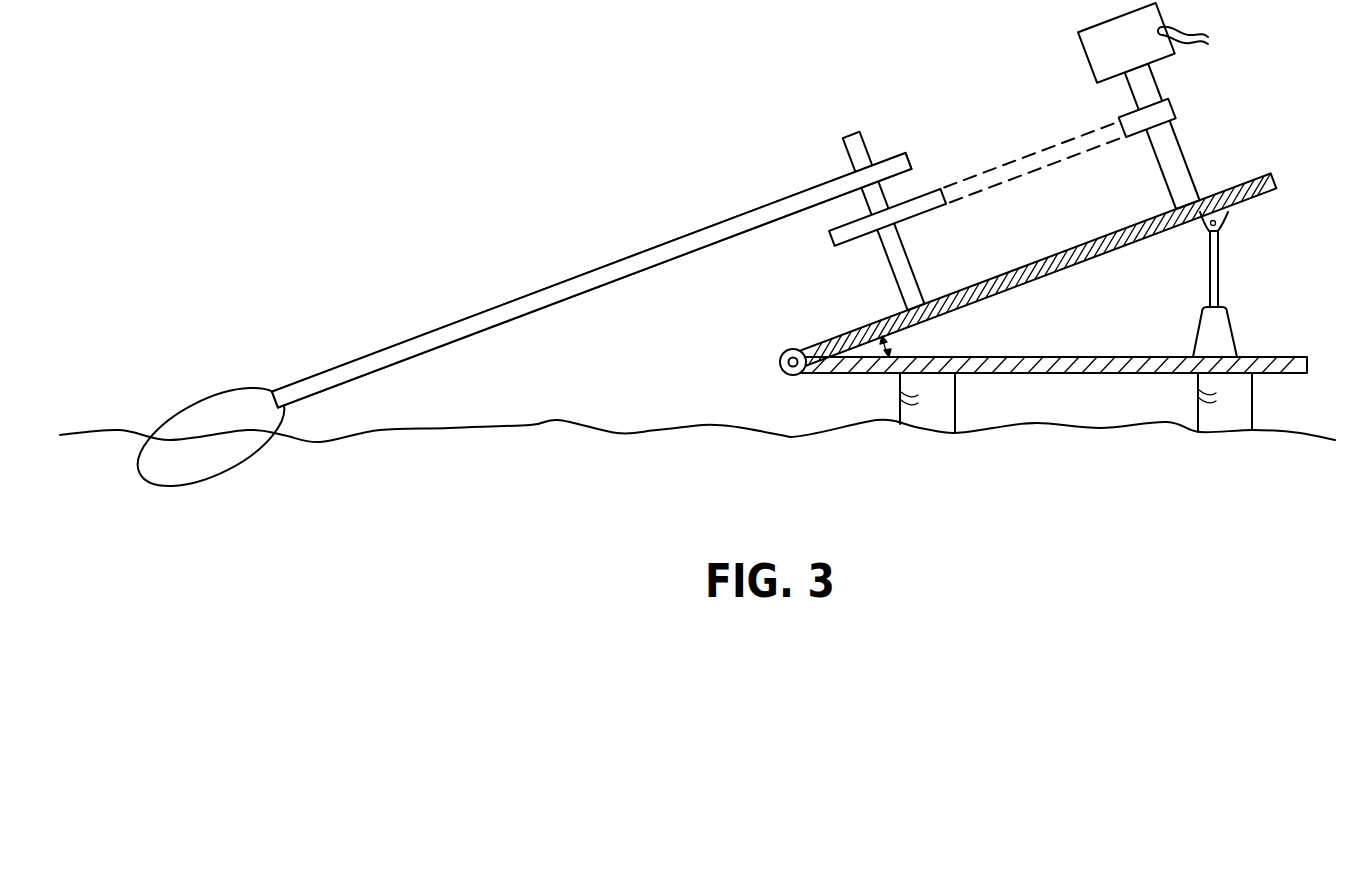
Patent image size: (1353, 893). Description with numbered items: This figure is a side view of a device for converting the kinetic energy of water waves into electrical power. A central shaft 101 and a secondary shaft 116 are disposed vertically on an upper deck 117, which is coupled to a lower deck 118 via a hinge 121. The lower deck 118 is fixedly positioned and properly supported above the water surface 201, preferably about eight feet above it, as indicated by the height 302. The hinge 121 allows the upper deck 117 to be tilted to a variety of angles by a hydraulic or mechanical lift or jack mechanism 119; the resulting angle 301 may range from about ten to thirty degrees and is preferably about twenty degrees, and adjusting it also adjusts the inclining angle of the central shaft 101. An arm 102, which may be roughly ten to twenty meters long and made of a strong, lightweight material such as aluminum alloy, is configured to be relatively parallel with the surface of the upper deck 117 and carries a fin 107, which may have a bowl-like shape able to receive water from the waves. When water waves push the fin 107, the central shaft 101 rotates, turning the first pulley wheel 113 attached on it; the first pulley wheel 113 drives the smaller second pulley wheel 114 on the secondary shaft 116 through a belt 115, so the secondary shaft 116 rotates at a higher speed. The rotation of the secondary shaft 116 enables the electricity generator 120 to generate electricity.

The central shaft 101 is at (892, 272).
The arm 102 is at (552, 309).
The fin 107 is at (215, 405).
The first pulley wheel 113 is at (918, 218).
The second pulley wheel 114 is at (1178, 105).
The belt 115 is at (1033, 168).
The secondary shaft 116 is at (1186, 170).
The upper deck 117 is at (1083, 266).
The lower deck 118 is at (1033, 357).
The hydraulic or mechanical lift or jack mechanism 119 is at (1220, 282).
The electricity generator 120 is at (1139, 52).
The hinge 121 is at (780, 367).
The water surface 201 is at (558, 419).
The angle 301 is at (898, 342).
The height of lower deck above water surface 302 is at (1197, 376).